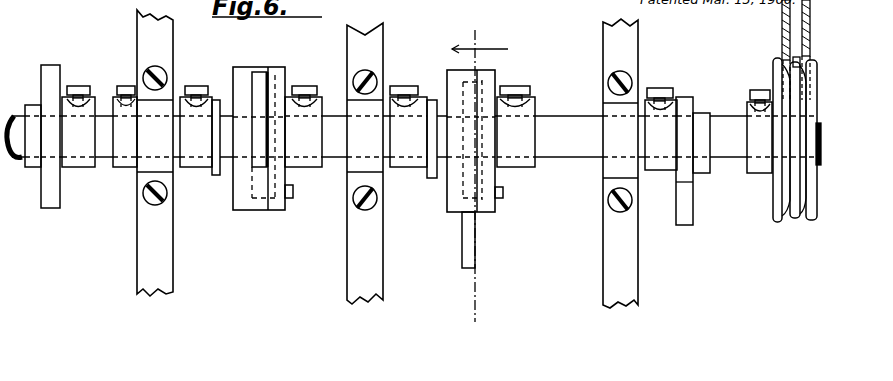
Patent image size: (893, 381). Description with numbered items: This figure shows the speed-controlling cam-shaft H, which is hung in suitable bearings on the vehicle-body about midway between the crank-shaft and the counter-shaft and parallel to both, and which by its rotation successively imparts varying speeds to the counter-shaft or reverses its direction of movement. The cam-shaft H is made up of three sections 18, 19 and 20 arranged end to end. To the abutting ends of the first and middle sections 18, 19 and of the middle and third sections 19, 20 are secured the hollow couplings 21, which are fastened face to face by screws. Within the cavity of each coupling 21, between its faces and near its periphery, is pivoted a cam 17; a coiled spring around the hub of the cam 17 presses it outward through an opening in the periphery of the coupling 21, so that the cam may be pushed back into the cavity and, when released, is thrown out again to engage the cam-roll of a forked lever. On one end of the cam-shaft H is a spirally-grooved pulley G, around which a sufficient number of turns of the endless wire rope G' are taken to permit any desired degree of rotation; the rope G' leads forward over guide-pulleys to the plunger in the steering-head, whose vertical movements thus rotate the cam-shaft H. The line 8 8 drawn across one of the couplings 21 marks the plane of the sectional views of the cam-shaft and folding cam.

The section line 8 is at (480, 178).
The cam 17 is at (260, 158).
The cam-shaft section 18 is at (89, 111).
The cam-shaft section 19 is at (331, 107).
The cam-shaft section 20 is at (569, 122).
The hollow coupling 21 is at (357, 107).
The speed-controlling cam-shaft H is at (366, 159).
The spirally-grooved pulley G is at (779, 146).
The endless wire rope G' is at (772, 50).